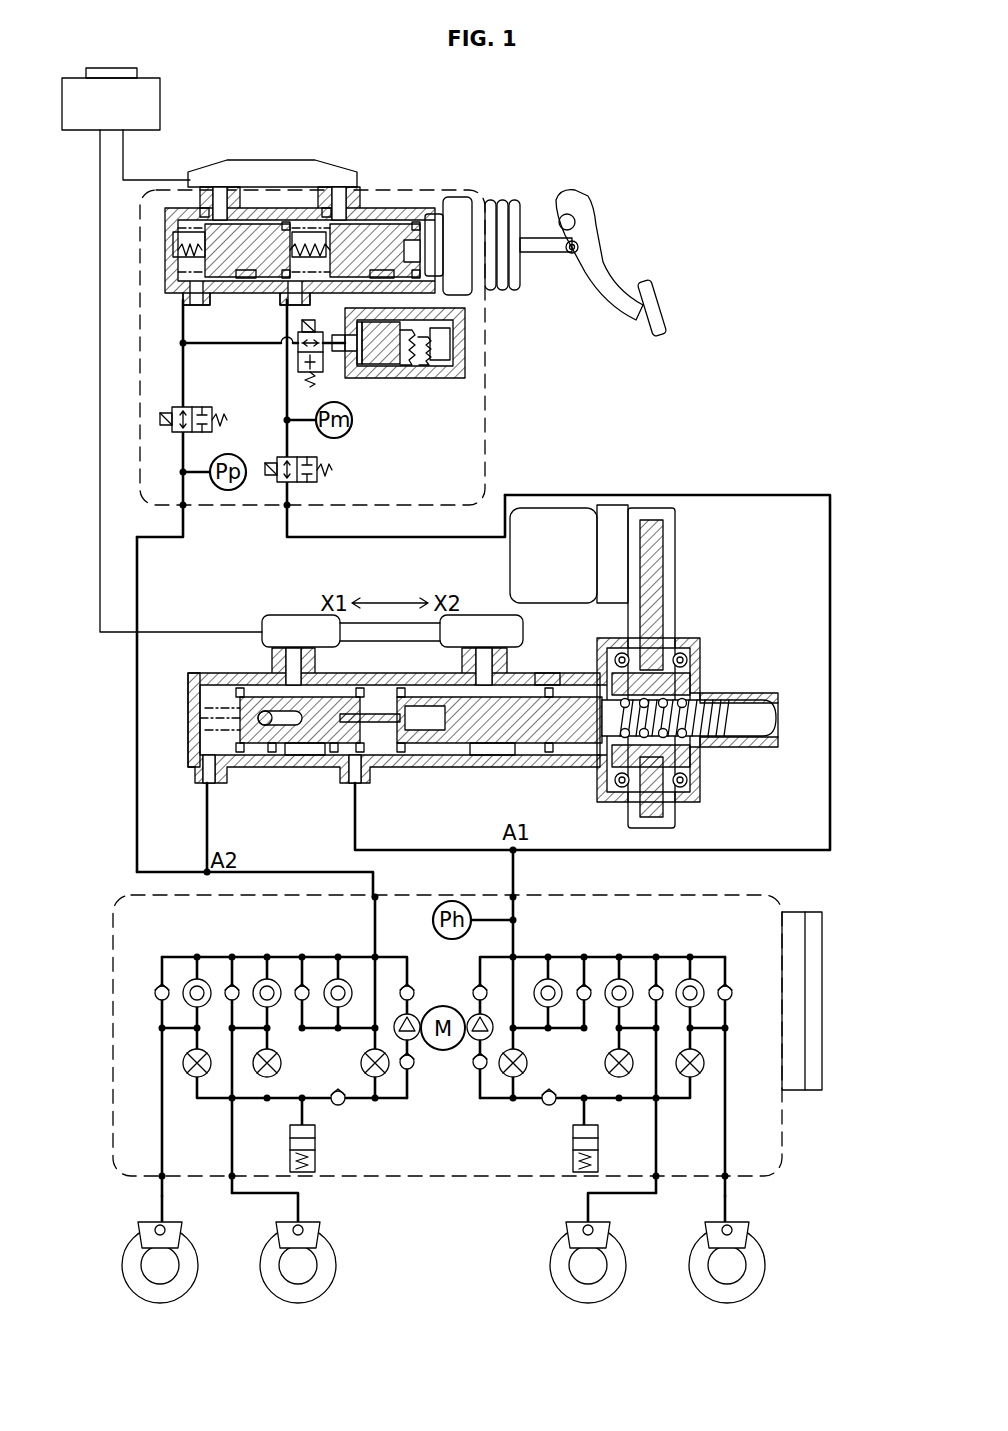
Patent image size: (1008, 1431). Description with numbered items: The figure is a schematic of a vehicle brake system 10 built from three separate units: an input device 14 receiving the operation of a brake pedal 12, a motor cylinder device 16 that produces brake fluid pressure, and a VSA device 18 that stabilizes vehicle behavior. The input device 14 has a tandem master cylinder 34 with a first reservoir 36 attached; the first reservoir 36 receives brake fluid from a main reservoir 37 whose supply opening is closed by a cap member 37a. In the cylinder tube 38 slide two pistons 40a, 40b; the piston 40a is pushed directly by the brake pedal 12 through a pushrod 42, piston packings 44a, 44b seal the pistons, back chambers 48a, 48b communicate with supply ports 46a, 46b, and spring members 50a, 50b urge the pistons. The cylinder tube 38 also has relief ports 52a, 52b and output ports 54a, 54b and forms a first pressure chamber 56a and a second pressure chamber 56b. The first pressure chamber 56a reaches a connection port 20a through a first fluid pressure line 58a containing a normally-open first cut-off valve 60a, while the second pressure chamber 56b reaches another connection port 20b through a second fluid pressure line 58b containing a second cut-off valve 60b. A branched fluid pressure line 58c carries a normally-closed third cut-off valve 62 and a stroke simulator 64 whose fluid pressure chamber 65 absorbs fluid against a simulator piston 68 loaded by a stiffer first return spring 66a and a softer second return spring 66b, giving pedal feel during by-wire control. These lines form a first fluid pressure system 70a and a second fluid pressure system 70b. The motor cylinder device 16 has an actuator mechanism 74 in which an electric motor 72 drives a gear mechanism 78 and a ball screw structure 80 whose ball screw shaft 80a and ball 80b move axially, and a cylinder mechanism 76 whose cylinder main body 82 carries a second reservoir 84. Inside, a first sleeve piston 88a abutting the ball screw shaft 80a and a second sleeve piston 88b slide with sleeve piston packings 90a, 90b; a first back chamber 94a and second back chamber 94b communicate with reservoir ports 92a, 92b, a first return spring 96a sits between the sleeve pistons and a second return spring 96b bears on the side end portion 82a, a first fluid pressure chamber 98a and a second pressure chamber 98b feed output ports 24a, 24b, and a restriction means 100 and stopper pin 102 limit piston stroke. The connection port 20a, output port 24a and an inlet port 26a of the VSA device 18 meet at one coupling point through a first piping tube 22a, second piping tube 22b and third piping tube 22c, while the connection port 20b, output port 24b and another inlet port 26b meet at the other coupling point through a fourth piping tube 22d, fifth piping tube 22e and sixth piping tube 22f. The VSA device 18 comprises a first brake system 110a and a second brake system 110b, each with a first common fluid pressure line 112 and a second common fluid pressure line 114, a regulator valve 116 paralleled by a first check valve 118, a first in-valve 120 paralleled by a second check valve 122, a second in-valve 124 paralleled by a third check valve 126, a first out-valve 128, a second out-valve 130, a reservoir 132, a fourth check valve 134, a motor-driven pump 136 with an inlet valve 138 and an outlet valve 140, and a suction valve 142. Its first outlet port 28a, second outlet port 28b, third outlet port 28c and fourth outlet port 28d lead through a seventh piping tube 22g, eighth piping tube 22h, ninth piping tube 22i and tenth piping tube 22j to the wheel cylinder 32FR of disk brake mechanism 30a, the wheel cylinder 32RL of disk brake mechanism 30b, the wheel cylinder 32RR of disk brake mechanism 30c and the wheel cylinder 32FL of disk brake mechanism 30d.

The vehicle brake system 10 is at (624, 127).
The brake pedal 12 is at (664, 318).
The input device 14 is at (487, 416).
The motor cylinder device 16 is at (698, 570).
The vehicle stability assist device 18 is at (690, 895).
The connection port 20a is at (287, 520).
The connection port 20b is at (184, 524).
The first piping tube 22a is at (831, 592).
The second piping tube 22b is at (410, 850).
The third piping tube 22c is at (514, 866).
The fourth piping tube 22d is at (137, 672).
The fifth piping tube 22e is at (206, 828).
The sixth piping tube 22f is at (312, 872).
The seventh piping tube 22g is at (728, 1212).
The eighth piping tube 22h is at (586, 1198).
The ninth piping tube 22i is at (300, 1196).
The tenth piping tube 22j is at (160, 1214).
The output port 24a is at (358, 785).
The output port 24b is at (211, 785).
The inlet port 26a is at (514, 897).
The inlet port 26b is at (376, 897).
The first outlet port 28a is at (727, 1182).
The second outlet port 28b is at (656, 1180).
The third outlet port 28c is at (232, 1182).
The fourth outlet port 28d is at (160, 1180).
The disk brake mechanism 30a is at (766, 1300).
The disk brake mechanism 30b is at (627, 1300).
The disk brake mechanism 30c is at (337, 1300).
The disk brake mechanism 30d is at (199, 1300).
The wheel cylinder 32FL is at (172, 1238).
The wheel cylinder 32RR is at (310, 1238).
The wheel cylinder 32RL is at (600, 1238).
The wheel cylinder 32FR is at (739, 1238).
The tandem master cylinder 34 is at (400, 208).
The first reservoir 36 is at (282, 162).
The main reservoir 37 is at (160, 94).
The cap member 37a is at (137, 72).
The cylinder tube 38 is at (445, 215).
The piston 40a is at (390, 210).
The piston 40b is at (232, 224).
The pushrod 42 is at (445, 240).
The spring 44a is at (275, 281).
The spring 44b is at (222, 281).
The supply port 46a is at (412, 224).
The supply port 46b is at (283, 224).
The back chamber 48a is at (383, 278).
The back chamber 48b is at (245, 278).
The spring member 50a is at (336, 195).
The spring member 50b is at (212, 195).
The relief port 52a is at (327, 208).
The relief port 52b is at (203, 208).
The output port 54a is at (295, 296).
The output port 54b is at (180, 299).
The first pressure chamber 56a is at (309, 250).
The second pressure chamber 56b is at (189, 250).
The first fluid pressure line 58a is at (285, 412).
The second fluid pressure line 58b is at (163, 402).
The branched fluid pressure line 58c is at (232, 345).
The first cut-off valve 60a is at (318, 481).
The second cut-off valve 60b is at (192, 407).
The third cut-off valve 62 is at (322, 362).
The stroke simulator 64 is at (476, 334).
The fluid pressure chamber 65 is at (360, 378).
The first return spring 66a is at (445, 372).
The second return spring 66b is at (410, 376).
The simulator piston 68 is at (380, 366).
The first fluid pressure system 70a is at (686, 474).
The second fluid pressure system 70b is at (104, 721).
The electric motor 72 is at (510, 563).
The actuator mechanism 74 is at (712, 652).
The cylinder mechanism 76 is at (464, 778).
The gear mechanism 78 is at (670, 600).
The ball screw structure 80 is at (773, 706).
The ball screw shaft 80a is at (712, 745).
The ball 80b is at (702, 694).
The cylinder main body 82 is at (548, 688).
The side end portion 82a is at (192, 730).
The second reservoir 84 is at (480, 615).
The first sleeve piston 88a is at (505, 743).
The second sleeve piston 88b is at (300, 743).
The sleeve piston packing 90a is at (335, 755).
The sleeve piston packing 90b is at (270, 755).
The reservoir port 92a is at (498, 660).
The reservoir port 92b is at (294, 660).
The first back chamber 94a is at (495, 757).
The second back chamber 94b is at (290, 757).
The first return spring 96a is at (400, 755).
The second return spring 96b is at (236, 690).
The first fluid pressure chamber 98a is at (403, 730).
The second pressure chamber 98b is at (219, 719).
The restriction means 100 is at (375, 714).
The stopper pin 102 is at (265, 710).
The first brake system 110a is at (731, 953).
The second brake system 110b is at (177, 947).
The first common fluid pressure line 112 is at (240, 956).
The second common fluid pressure line 114 is at (240, 1099).
The regulator valve 116 is at (339, 978).
The first check valve 118 is at (302, 985).
The first in-valve 120 is at (197, 978).
The second check valve 122 is at (158, 985).
The second in-valve 124 is at (267, 978).
The third check valve 126 is at (232, 985).
The first out-valve 128 is at (195, 1078).
The second out-valve 130 is at (282, 1062).
The reservoir 132 is at (316, 1160).
The fourth check valve 134 is at (340, 1106).
The pump 136 is at (464, 1045).
The inlet valve 138 is at (474, 1068).
The outlet valve 140 is at (478, 985).
The suction valve 142 is at (404, 1042).